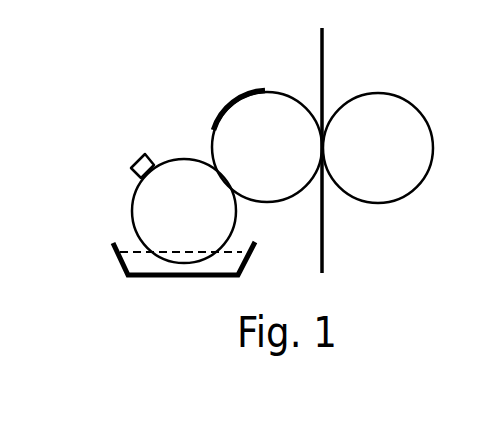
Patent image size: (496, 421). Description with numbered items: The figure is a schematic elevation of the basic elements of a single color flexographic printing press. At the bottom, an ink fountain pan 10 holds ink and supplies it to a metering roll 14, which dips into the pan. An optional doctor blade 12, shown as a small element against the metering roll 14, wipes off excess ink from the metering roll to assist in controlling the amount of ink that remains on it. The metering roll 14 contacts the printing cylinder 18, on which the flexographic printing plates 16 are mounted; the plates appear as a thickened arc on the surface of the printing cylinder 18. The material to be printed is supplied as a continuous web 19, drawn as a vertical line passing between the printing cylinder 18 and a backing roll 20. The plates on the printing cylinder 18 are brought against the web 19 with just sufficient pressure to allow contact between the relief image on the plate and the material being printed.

The ink fountain pan 10 is at (112, 247).
The doctor blade 12 is at (135, 163).
The metering roll 14 is at (182, 168).
The flexographic printing plates 16 is at (237, 95).
The printing cylinder 18 is at (280, 200).
The continuous web 19 is at (323, 57).
The backing roll 20 is at (405, 187).